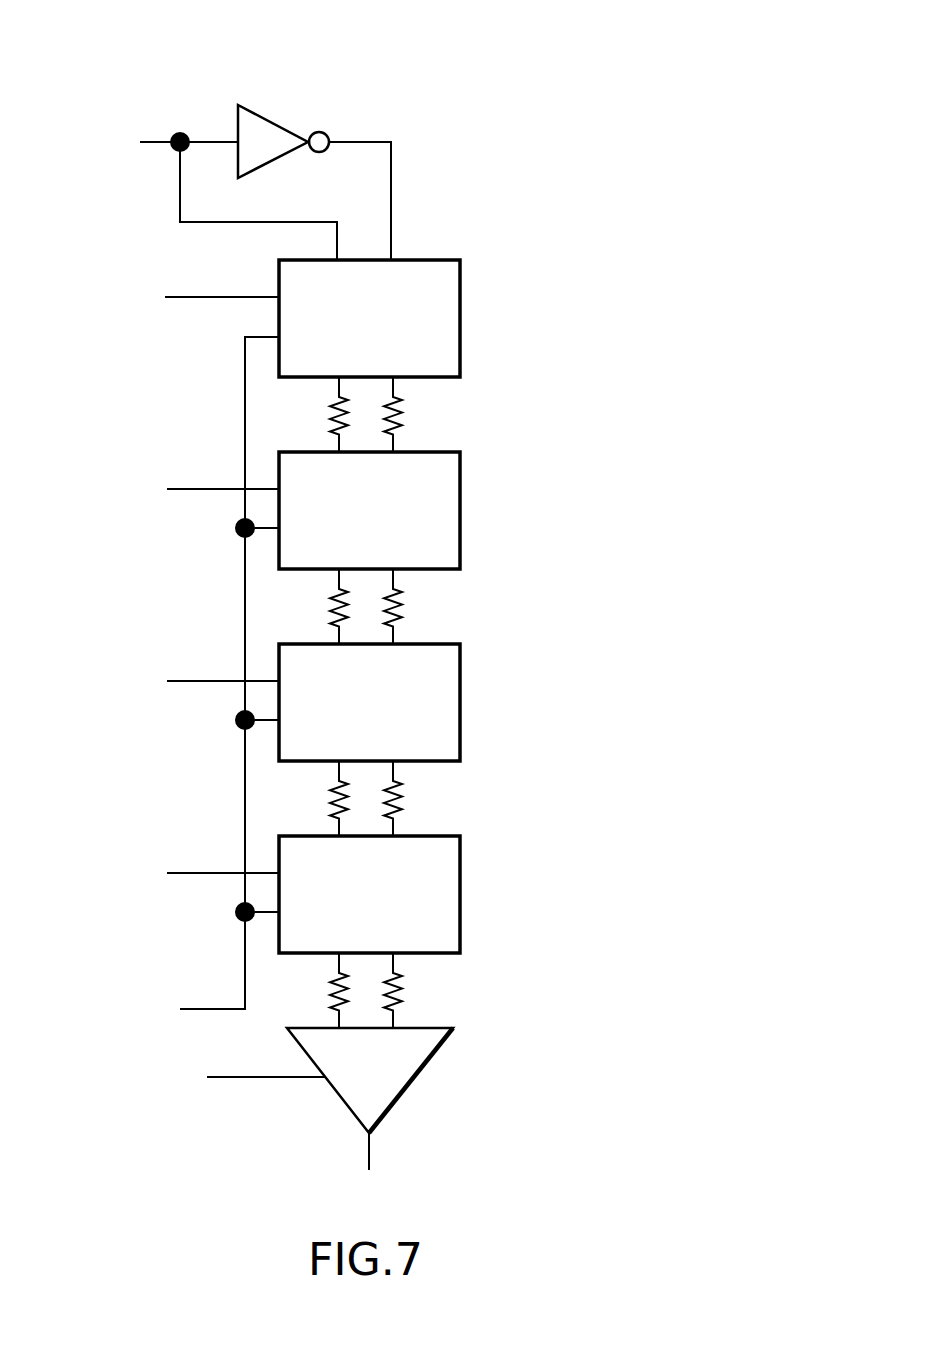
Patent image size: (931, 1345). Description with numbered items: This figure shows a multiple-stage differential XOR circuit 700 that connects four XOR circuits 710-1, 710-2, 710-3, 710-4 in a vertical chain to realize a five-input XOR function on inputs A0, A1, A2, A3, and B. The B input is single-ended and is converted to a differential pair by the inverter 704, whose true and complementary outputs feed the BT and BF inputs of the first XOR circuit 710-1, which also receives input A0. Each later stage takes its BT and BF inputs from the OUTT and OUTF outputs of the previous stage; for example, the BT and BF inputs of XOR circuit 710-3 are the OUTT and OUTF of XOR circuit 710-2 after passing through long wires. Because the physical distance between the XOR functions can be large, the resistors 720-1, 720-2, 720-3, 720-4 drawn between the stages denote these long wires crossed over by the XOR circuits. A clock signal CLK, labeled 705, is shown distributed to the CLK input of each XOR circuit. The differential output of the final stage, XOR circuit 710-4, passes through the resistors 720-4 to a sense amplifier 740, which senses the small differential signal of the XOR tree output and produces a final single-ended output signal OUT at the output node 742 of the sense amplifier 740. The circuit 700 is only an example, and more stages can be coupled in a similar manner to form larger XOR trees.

The multiple-stage differential XOR circuit 700 is at (502, 66).
The inverter 704 is at (284, 118).
The clock signal CLK 705 is at (125, 1010).
The XOR circuit 710-1 is at (461, 318).
The XOR circuit 710-2 is at (461, 510).
The XOR circuit 710-3 is at (461, 702).
The XOR circuit 710-4 is at (461, 894).
The resistors 720-1 is at (445, 413).
The resistors 720-2 is at (445, 605).
The resistors 720-3 is at (445, 797).
The resistors 720-4 is at (445, 989).
The sense amplifier 740 is at (410, 1085).
The output node 742 is at (127, 1077).